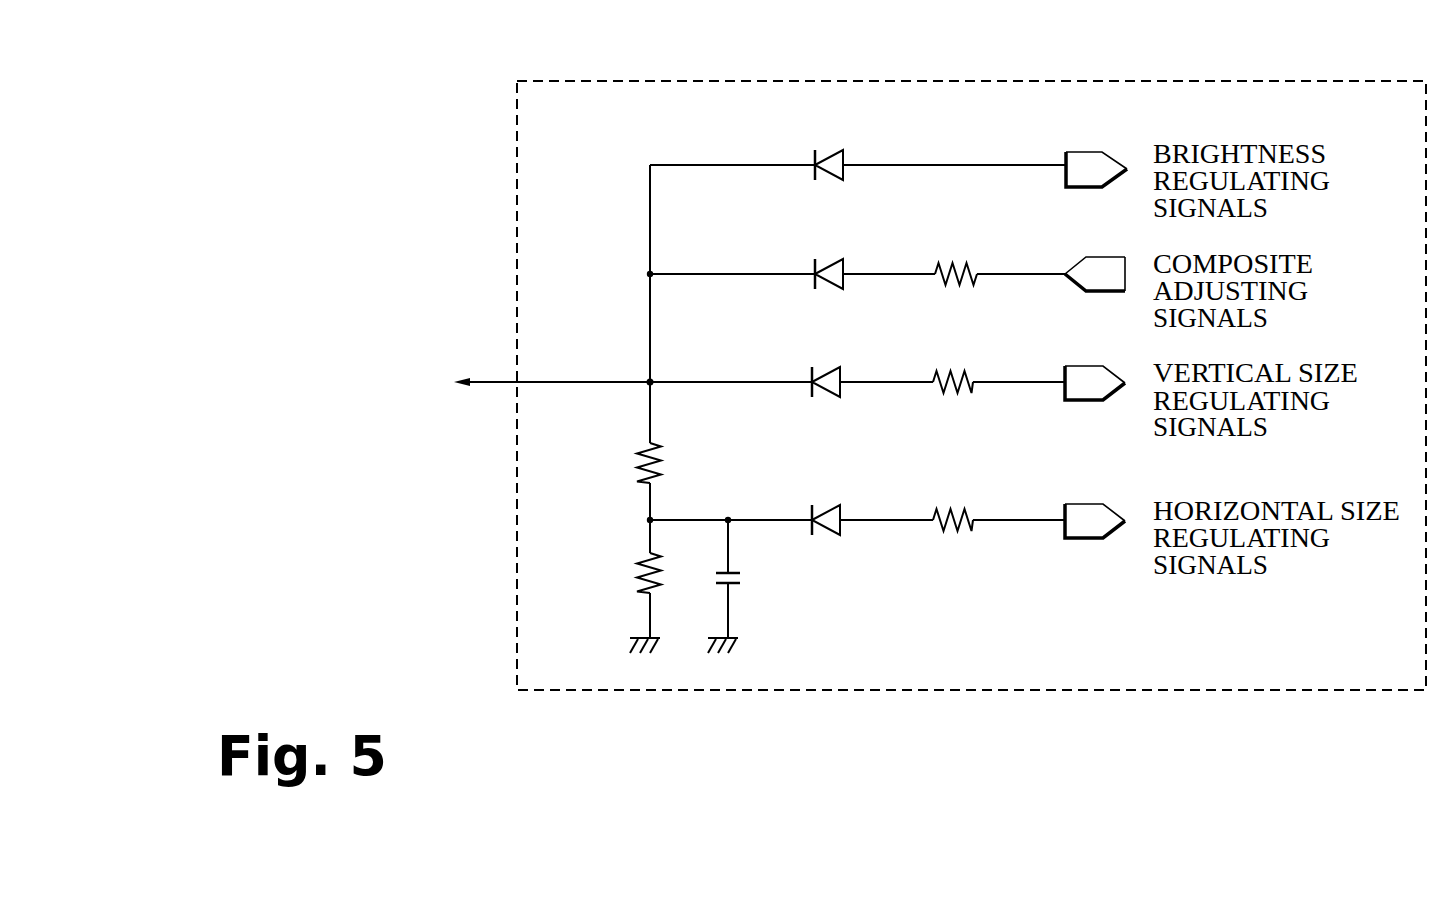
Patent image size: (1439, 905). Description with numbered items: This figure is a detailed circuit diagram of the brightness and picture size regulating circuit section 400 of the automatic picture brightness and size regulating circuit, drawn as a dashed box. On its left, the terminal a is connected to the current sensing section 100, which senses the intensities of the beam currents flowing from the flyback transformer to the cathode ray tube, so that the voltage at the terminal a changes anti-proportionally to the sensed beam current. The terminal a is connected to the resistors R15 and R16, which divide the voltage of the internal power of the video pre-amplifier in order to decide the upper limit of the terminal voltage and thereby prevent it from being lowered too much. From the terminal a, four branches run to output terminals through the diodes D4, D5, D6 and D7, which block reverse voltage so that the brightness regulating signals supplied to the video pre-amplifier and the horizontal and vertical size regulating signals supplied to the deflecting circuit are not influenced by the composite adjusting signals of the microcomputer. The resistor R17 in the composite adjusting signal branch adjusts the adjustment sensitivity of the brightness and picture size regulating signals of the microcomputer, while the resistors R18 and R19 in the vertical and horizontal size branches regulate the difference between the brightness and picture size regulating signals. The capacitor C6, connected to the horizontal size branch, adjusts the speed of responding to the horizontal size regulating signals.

The brightness and picture size regulating circuit section 400 is at (958, 82).
The current sensing section 100 is at (486, 388).
The terminal a is at (654, 385).
The diode D4 is at (830, 144).
The diode D5 is at (830, 253).
The diode D6 is at (825, 362).
The diode D7 is at (825, 500).
The resistor R15 is at (618, 481).
The resistor R16 is at (618, 586).
The resistor R17 is at (961, 253).
The resistor R18 is at (956, 361).
The resistor R19 is at (953, 500).
The capacitor C6 is at (744, 586).